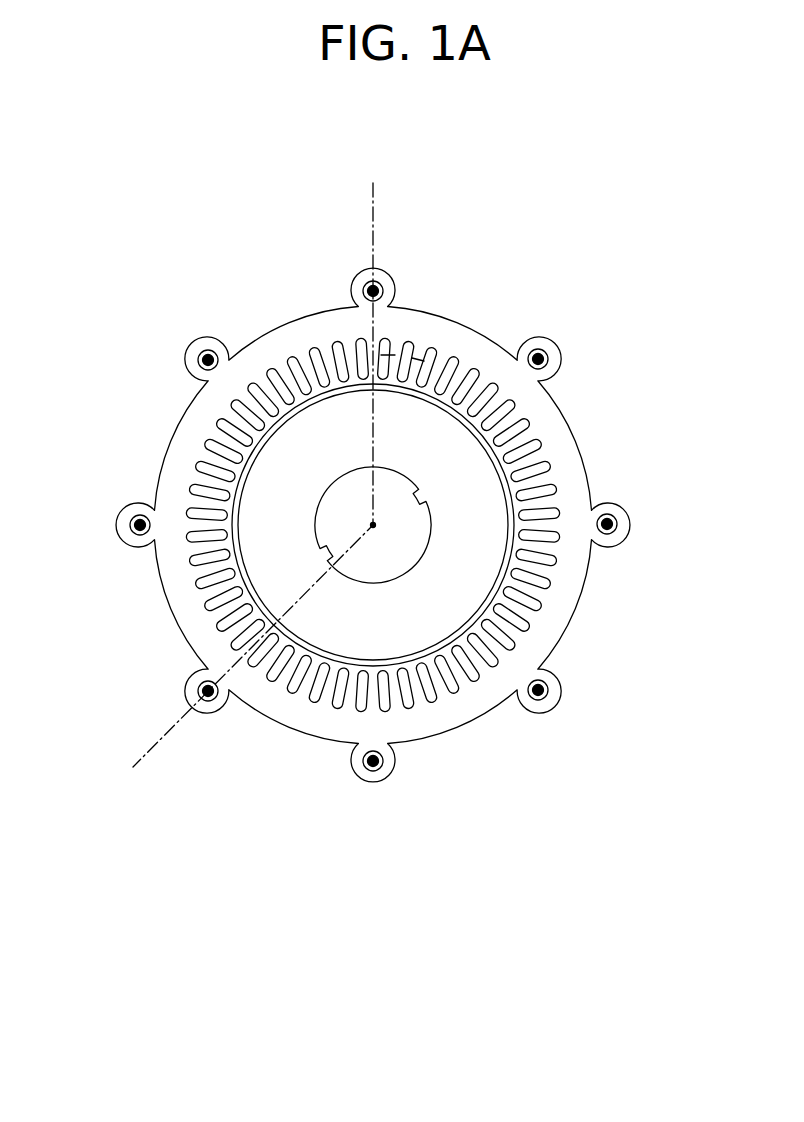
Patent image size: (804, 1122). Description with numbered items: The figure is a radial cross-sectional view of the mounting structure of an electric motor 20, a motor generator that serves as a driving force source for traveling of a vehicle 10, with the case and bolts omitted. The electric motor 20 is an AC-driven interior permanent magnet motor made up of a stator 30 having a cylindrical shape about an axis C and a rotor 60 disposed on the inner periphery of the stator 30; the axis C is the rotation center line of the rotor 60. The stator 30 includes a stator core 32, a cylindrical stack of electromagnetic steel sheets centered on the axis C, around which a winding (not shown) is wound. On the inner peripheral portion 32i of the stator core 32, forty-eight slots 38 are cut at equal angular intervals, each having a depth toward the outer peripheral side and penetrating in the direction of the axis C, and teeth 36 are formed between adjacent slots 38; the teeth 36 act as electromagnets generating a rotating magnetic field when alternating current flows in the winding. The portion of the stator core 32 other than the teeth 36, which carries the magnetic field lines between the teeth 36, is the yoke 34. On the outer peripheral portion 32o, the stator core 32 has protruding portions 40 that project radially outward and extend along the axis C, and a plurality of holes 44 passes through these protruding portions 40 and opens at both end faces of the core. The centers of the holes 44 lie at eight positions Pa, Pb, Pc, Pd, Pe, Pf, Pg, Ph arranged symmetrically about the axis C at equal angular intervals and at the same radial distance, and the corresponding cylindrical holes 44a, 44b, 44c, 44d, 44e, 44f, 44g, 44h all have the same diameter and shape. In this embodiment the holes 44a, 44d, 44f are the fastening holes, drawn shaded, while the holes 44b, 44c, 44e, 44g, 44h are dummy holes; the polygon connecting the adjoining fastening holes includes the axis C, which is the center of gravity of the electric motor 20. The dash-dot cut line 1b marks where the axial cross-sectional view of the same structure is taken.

The vehicle 10 is at (209, 144).
The electric motor 20 is at (466, 192).
The stator 30 is at (160, 242).
The stator core 32 is at (568, 401).
The outer peripheral portion 32o is at (573, 430).
The inner peripheral portion 32i is at (505, 468).
The yoke 34 is at (545, 633).
The teeth 36 is at (418, 357).
The slots 38 is at (388, 353).
The protruding portion 40 is at (366, 285).
The holes 44 is at (388, 524).
The hole 44a is at (377, 289).
The hole 44b is at (542, 357).
The hole 44c is at (611, 530).
The hole 44d is at (538, 695).
The hole 44e is at (369, 767).
The hole 44f is at (203, 692).
The hole 44g is at (137, 522).
The hole 44h is at (208, 357).
The rotor 60 is at (460, 549).
The axis C is at (373, 525).
The cut line 1b is at (376, 201).
The position Pa is at (372, 291).
The position Pb is at (540, 356).
The position Pc is at (612, 521).
The position Pd is at (546, 690).
The position Pe is at (377, 768).
The position Pf is at (208, 695).
The position Pg is at (138, 528).
The position Ph is at (204, 360).